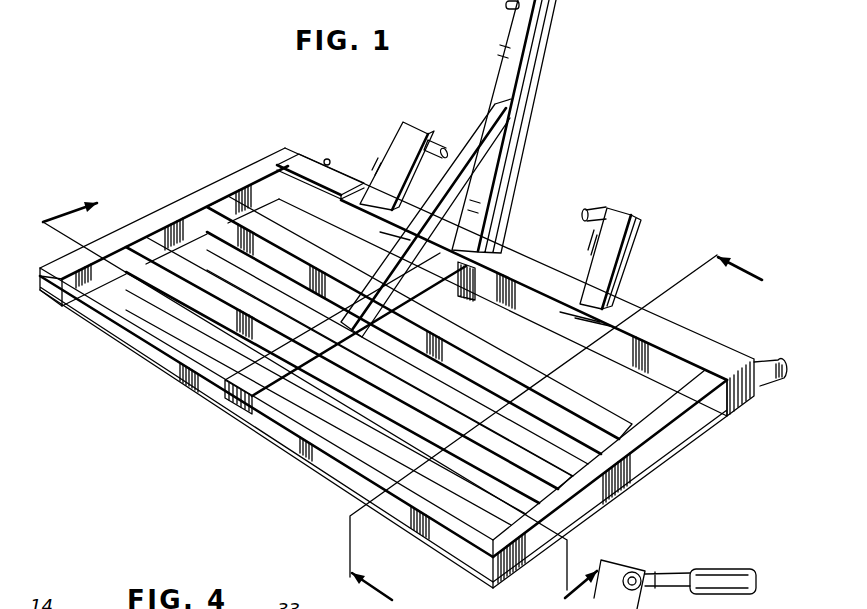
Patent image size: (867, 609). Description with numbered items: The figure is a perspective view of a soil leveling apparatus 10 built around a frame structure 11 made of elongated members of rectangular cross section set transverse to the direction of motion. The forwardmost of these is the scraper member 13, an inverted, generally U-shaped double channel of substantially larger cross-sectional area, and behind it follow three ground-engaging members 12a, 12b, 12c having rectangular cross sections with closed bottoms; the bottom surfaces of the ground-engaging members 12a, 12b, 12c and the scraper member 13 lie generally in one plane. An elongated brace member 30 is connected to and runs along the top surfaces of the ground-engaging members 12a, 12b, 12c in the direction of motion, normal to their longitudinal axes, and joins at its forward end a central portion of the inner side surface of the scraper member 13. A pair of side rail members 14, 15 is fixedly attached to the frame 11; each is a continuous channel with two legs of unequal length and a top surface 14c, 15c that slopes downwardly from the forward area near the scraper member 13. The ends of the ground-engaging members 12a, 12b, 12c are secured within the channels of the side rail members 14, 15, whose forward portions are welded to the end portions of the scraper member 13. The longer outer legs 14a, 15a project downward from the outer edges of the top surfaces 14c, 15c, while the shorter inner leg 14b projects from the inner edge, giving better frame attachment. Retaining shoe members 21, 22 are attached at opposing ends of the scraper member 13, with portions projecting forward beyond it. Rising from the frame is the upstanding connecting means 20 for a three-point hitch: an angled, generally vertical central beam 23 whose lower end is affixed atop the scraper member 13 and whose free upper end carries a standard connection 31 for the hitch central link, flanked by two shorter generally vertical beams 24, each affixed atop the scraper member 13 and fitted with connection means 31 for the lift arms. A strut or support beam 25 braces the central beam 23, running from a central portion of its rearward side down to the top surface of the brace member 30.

The soil leveling apparatus 10 is at (673, 157).
The frame structure 11 is at (145, 365).
The ground-engaging member 12a is at (497, 360).
The ground-engaging member 12b is at (437, 409).
The ground-engaging member 12c is at (375, 471).
The scraper member 13 is at (687, 333).
The side rail member 14 is at (182, 200).
The outer leg 14a is at (40, 281).
The inner leg 14b is at (167, 230).
The top surface 14c is at (203, 180).
The side rail member 15 is at (630, 483).
The outer leg 15a is at (680, 447).
The top surface 15c is at (677, 410).
The connecting means 20 is at (463, 112).
The retaining shoe member 21 is at (777, 387).
The retaining shoe member 22 is at (327, 158).
The central beam 23 is at (522, 130).
The shorter beam 24 is at (398, 146).
The support beam 25 is at (393, 243).
The brace member 30 is at (323, 337).
The standard connection means 31 is at (557, 10).